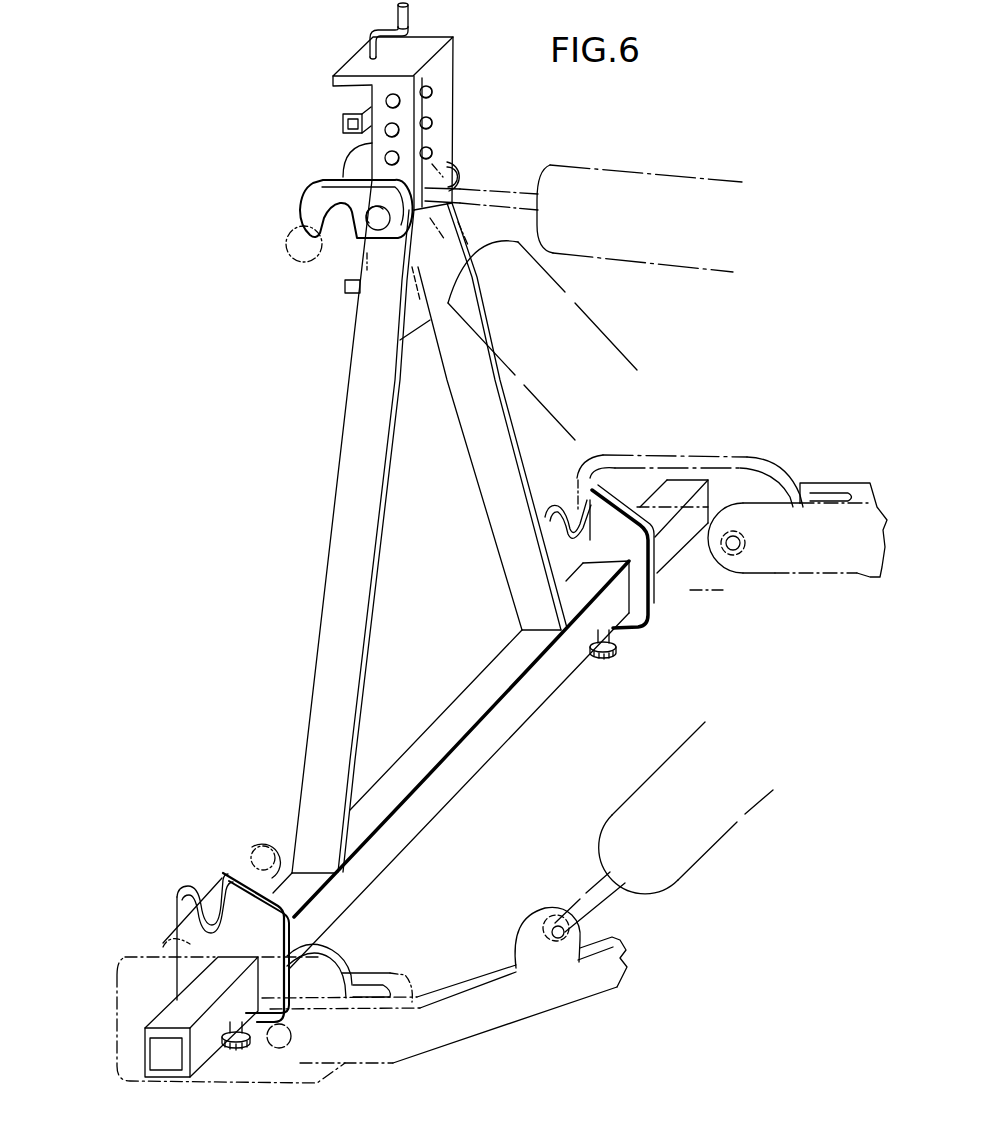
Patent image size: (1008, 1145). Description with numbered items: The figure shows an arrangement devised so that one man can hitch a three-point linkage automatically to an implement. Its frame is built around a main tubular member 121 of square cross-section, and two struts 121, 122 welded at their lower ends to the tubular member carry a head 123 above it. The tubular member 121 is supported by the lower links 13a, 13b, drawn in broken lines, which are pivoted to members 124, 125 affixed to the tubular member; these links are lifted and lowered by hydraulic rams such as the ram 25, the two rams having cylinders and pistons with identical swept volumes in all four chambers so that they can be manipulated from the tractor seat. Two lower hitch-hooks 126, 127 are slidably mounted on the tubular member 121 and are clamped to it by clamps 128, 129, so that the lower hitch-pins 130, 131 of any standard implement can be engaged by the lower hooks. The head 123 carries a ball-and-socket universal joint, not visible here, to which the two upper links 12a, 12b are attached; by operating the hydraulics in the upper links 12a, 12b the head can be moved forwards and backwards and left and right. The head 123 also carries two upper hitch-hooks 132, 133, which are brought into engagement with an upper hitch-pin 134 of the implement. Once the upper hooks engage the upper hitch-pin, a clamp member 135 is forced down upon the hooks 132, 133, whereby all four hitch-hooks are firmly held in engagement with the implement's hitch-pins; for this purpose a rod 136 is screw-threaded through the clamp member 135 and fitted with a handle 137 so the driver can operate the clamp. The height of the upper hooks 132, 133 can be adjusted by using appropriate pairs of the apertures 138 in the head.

The upper link 12a is at (621, 159).
The upper link 12b is at (604, 333).
The link 13a is at (506, 1023).
The link 13b is at (815, 573).
The hydraulic ram 25 is at (697, 862).
The main tubular member 121 is at (355, 440).
The strut 122 is at (437, 313).
The head 123 is at (458, 134).
The member 124 is at (143, 940).
The member 125 is at (663, 455).
The lower hitch-hook 126 is at (313, 903).
The lower hitch-hook 127 is at (655, 610).
The clamp 128 is at (237, 1050).
The clamp 129 is at (618, 654).
The lower hitch-pin 130 is at (260, 852).
The lower hitch-pin 131 is at (583, 476).
The upper hitch-hook 132 is at (313, 195).
The upper hitch-hook 133 is at (462, 168).
The upper hitch-pin 134 is at (289, 246).
The clamp member 135 is at (343, 127).
The rod 136 is at (370, 88).
The handle 137 is at (397, 13).
The apertures 138 is at (430, 122).